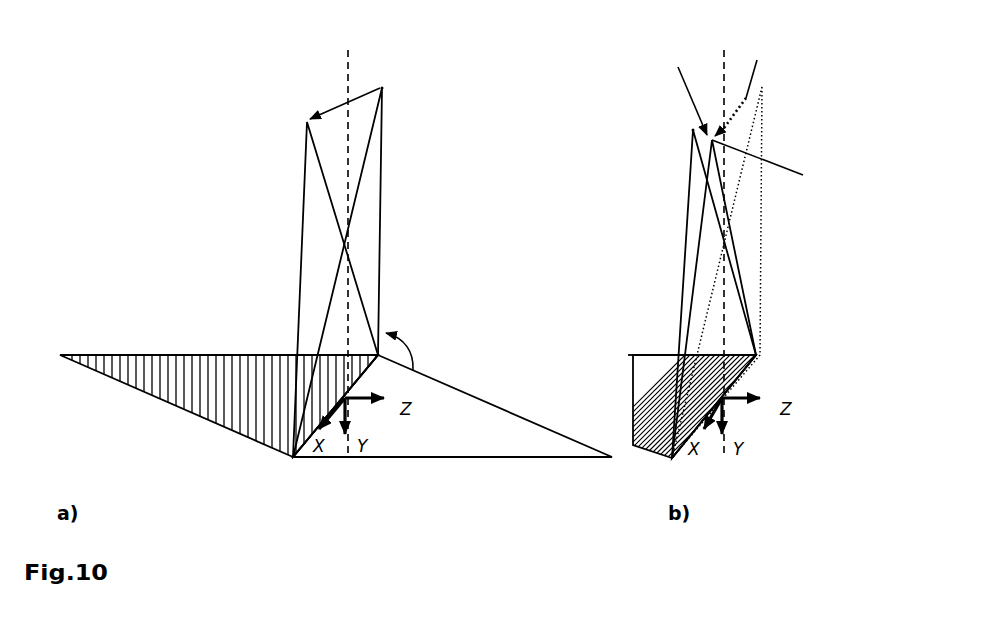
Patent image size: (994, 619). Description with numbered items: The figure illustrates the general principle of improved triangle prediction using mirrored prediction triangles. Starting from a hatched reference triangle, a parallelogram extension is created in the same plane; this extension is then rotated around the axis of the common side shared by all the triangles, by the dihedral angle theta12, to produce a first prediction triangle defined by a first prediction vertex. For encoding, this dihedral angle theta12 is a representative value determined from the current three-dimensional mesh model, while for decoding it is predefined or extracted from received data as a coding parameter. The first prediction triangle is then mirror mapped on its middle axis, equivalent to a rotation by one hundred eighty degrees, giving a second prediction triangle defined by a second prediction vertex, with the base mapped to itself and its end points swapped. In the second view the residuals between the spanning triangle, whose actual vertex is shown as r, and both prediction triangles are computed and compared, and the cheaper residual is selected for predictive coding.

The dihedral angle theta12 is at (411, 348).
The actual vertex r is at (769, 160).